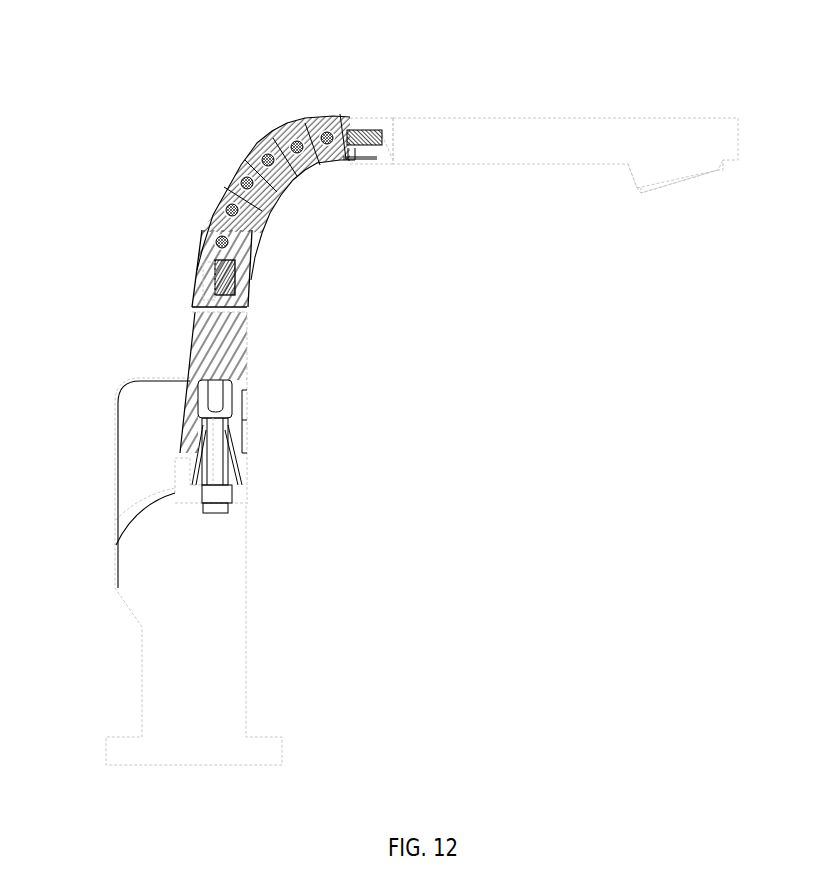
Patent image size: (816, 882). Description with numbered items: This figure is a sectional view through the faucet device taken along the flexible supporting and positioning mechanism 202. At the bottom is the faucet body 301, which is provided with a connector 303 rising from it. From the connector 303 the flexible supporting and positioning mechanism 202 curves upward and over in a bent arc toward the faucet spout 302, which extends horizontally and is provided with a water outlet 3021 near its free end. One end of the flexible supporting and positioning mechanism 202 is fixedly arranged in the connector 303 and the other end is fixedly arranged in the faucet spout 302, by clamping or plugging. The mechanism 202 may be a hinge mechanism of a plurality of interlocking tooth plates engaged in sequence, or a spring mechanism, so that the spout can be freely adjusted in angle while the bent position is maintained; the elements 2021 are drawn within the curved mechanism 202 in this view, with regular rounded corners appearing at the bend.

The faucet body 301 is at (172, 593).
The faucet spout 302 is at (537, 123).
The water outlet 3021 is at (663, 167).
The connector 303 is at (203, 289).
The flexible supporting and positioning mechanism 202 is at (243, 160).
The rollers 2021 is at (258, 168).